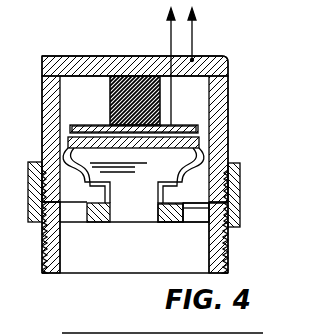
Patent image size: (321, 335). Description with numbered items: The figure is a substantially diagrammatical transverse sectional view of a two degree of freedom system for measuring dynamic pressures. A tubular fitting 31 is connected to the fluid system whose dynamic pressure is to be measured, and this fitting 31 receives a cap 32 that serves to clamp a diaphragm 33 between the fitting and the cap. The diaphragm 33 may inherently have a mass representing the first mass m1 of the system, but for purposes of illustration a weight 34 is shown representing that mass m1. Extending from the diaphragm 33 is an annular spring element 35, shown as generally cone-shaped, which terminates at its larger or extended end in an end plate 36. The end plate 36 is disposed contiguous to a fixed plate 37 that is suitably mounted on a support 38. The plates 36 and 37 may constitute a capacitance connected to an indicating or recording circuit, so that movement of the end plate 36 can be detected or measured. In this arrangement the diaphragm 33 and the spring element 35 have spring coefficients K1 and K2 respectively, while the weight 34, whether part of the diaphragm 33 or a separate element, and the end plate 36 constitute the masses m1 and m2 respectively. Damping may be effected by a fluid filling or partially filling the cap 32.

The tubular fitting 31 is at (78, 258).
The cap 32 is at (47, 61).
The diaphragm 33 is at (73, 205).
The weight 34 is at (107, 222).
The annular spring element 35 is at (199, 146).
The end plate 36 is at (198, 128).
The fixed plate 37 is at (228, 89).
The support 38 is at (160, 66).
The mass of the end plate m2 is at (103, 125).
The spring coefficient of the spring element K2 is at (172, 183).
The mass of the diaphragm or weight m1 is at (161, 215).
The spring coefficient of the diaphragm K1 is at (191, 212).